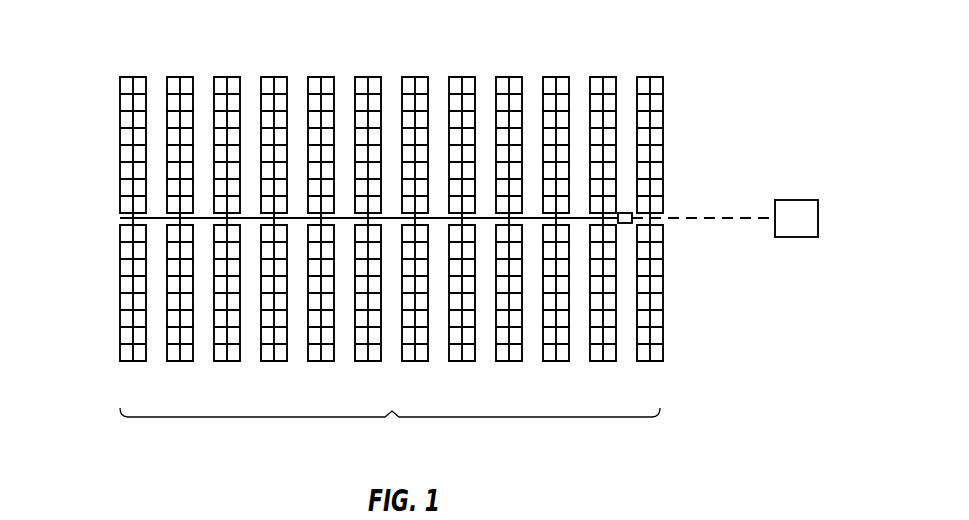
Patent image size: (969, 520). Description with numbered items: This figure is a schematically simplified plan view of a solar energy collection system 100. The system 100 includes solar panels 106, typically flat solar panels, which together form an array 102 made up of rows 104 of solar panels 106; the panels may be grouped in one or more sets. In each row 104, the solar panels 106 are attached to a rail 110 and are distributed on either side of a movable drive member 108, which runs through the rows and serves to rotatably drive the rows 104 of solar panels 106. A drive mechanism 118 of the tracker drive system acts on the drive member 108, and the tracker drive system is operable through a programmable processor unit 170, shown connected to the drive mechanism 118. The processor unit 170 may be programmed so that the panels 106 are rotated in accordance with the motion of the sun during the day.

The solar energy collection system 100 is at (104, 368).
The array 102 is at (392, 413).
The rows 104 is at (557, 75).
The solar panels 106 is at (656, 132).
The drive member 108 is at (207, 218).
The rail 110 is at (651, 284).
The drive mechanism 118 is at (630, 213).
The programmable processor unit 170 is at (795, 212).